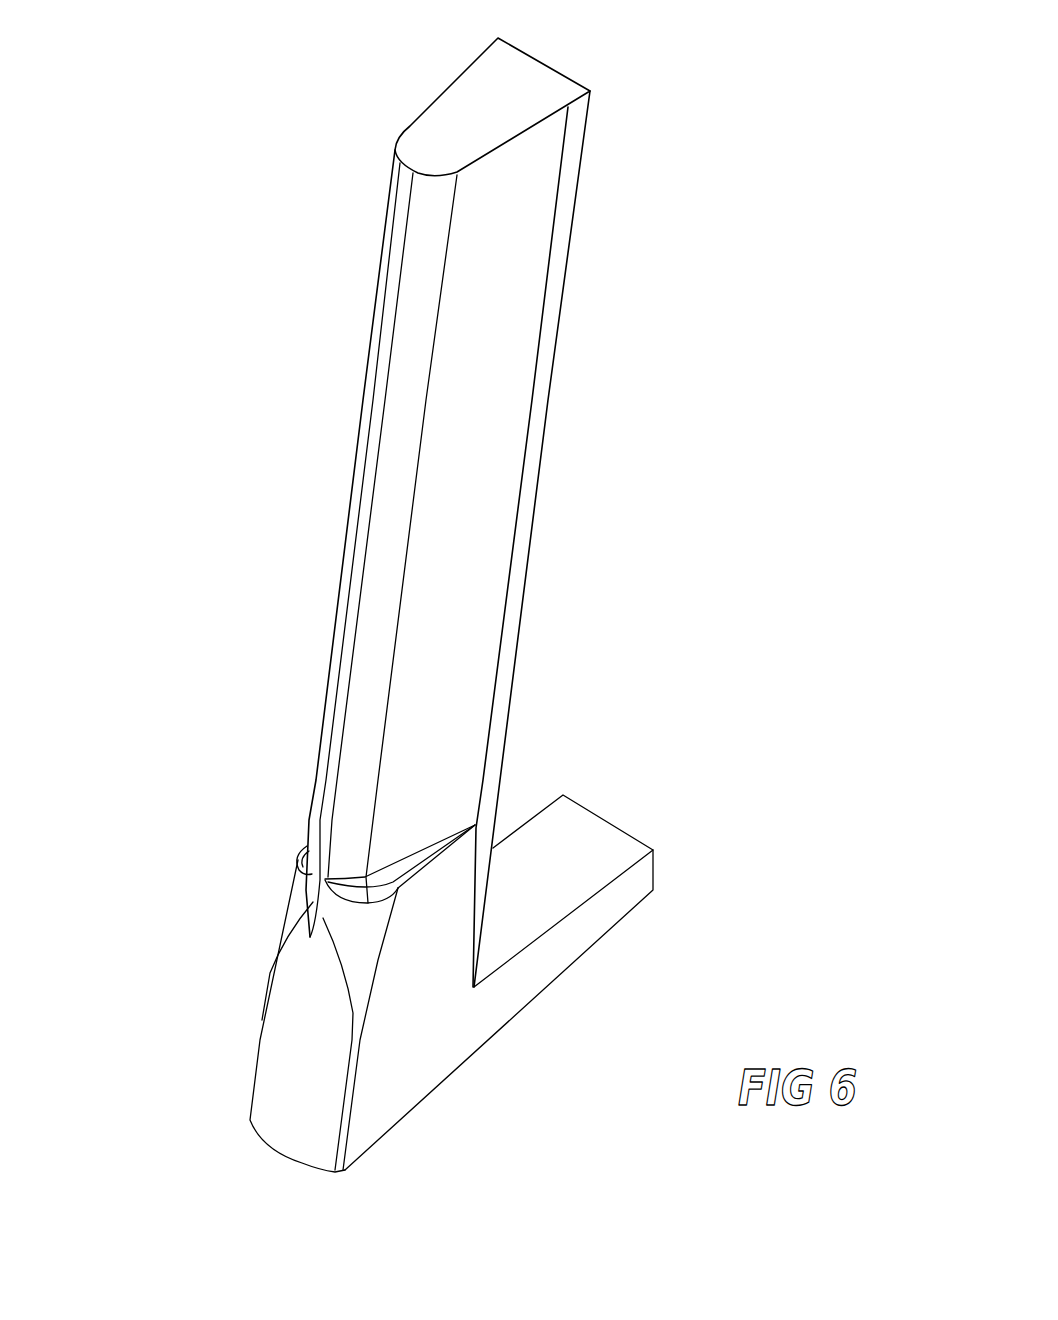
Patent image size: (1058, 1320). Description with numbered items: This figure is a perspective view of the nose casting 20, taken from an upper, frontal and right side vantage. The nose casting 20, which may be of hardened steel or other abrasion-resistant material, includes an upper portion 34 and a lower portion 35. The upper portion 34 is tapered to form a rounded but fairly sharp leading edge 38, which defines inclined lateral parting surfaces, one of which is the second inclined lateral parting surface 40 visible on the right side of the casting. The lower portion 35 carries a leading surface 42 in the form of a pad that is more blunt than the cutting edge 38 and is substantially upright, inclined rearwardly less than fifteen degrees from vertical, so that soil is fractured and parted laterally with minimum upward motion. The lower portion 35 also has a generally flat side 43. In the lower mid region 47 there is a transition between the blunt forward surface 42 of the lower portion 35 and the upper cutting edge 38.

The nose casting 20 is at (538, 663).
The upper portion 34 is at (597, 229).
The lower portion 35 is at (675, 900).
The leading edge 38 is at (360, 548).
The second inclined lateral parting surface 40 is at (473, 490).
The leading surface 42 is at (293, 1062).
The side 43 is at (423, 1037).
The lower mid region 47 is at (258, 812).